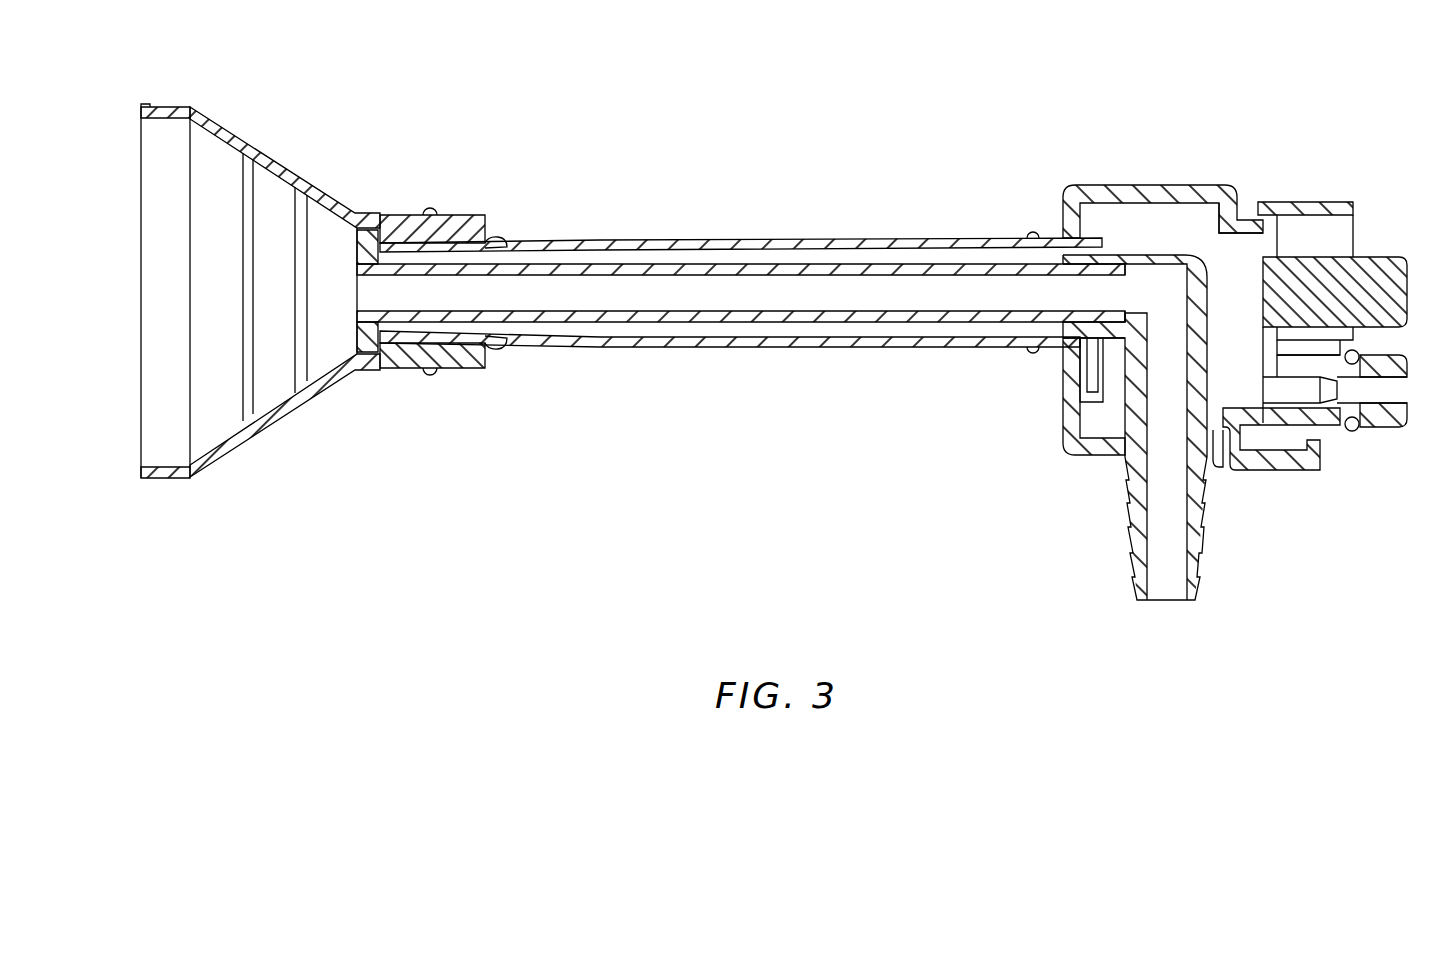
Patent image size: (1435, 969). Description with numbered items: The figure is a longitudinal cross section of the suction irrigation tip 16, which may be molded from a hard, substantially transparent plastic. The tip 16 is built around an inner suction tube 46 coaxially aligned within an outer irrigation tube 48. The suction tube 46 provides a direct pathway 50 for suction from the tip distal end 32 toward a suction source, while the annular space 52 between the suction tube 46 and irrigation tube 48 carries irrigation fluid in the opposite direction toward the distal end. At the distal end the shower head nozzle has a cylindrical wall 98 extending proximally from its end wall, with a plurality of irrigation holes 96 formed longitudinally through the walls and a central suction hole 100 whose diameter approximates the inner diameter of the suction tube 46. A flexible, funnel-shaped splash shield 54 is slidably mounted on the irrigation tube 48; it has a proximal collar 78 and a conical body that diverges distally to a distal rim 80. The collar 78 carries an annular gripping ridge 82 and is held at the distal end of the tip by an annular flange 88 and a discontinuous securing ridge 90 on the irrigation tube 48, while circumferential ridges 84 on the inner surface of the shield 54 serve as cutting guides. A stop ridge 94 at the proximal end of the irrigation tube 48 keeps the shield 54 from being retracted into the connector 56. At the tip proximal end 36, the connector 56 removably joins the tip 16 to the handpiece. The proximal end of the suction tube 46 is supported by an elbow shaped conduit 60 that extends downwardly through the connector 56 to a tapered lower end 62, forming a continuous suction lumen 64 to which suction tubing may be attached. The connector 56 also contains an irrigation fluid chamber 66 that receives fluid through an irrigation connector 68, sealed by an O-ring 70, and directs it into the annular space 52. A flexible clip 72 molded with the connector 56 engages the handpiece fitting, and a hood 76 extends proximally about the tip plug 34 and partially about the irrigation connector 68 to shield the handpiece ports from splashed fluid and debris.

The tip 16 is at (741, 274).
The tip distal end 32 is at (333, 271).
The tip plug 34 is at (1378, 258).
The tip proximal end 36 is at (1214, 357).
The suction tube 46 is at (855, 318).
The irrigation tube 48 is at (958, 350).
The pathway 50 is at (757, 290).
The annular space 52 is at (832, 258).
The splash shield 54 is at (250, 129).
The connector 56 is at (1175, 173).
The elbow shaped conduit 60 is at (1190, 250).
The tapered lower end 62 is at (1121, 564).
The suction lumen 64 is at (1138, 297).
The irrigation fluid chamber 66 is at (1205, 245).
The irrigation connector 68 is at (1392, 427).
The O-ring 70 is at (1351, 432).
The flexible clip 72 is at (1307, 475).
The hood 76 is at (1340, 200).
The proximal collar 78 is at (455, 230).
The distal rim 80 is at (146, 108).
The annular gripping ridge 82 is at (428, 212).
The circumferential ridges 84 is at (245, 322).
The annular flange 88 is at (372, 340).
The securing ridge 90 is at (505, 238).
The stop ridge 94 is at (1032, 234).
The irrigation holes 96 is at (360, 250).
The cylindrical wall 98 is at (425, 323).
The central suction hole 100 is at (353, 293).